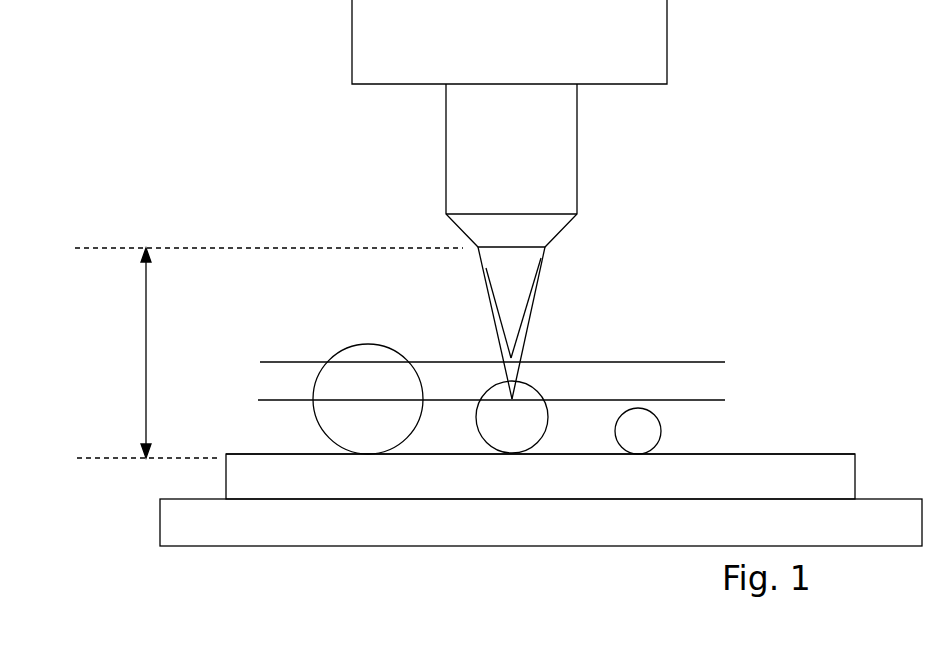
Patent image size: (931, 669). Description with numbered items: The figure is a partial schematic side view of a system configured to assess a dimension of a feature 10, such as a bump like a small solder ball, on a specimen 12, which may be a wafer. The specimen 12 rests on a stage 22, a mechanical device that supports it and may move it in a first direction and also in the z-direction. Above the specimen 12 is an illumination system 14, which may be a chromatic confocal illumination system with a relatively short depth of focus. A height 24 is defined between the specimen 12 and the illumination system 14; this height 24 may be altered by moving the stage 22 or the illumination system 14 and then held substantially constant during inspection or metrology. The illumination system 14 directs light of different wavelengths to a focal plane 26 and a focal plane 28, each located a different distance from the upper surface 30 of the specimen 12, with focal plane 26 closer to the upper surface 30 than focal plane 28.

The feature 10 is at (710, 433).
The specimen 12 is at (540, 476).
The illumination system 14 is at (698, 61).
The stage 22 is at (541, 522).
The height 24 is at (124, 371).
The focal plane 26 is at (728, 390).
The focal plane 28 is at (681, 354).
The upper surface 30 is at (794, 441).